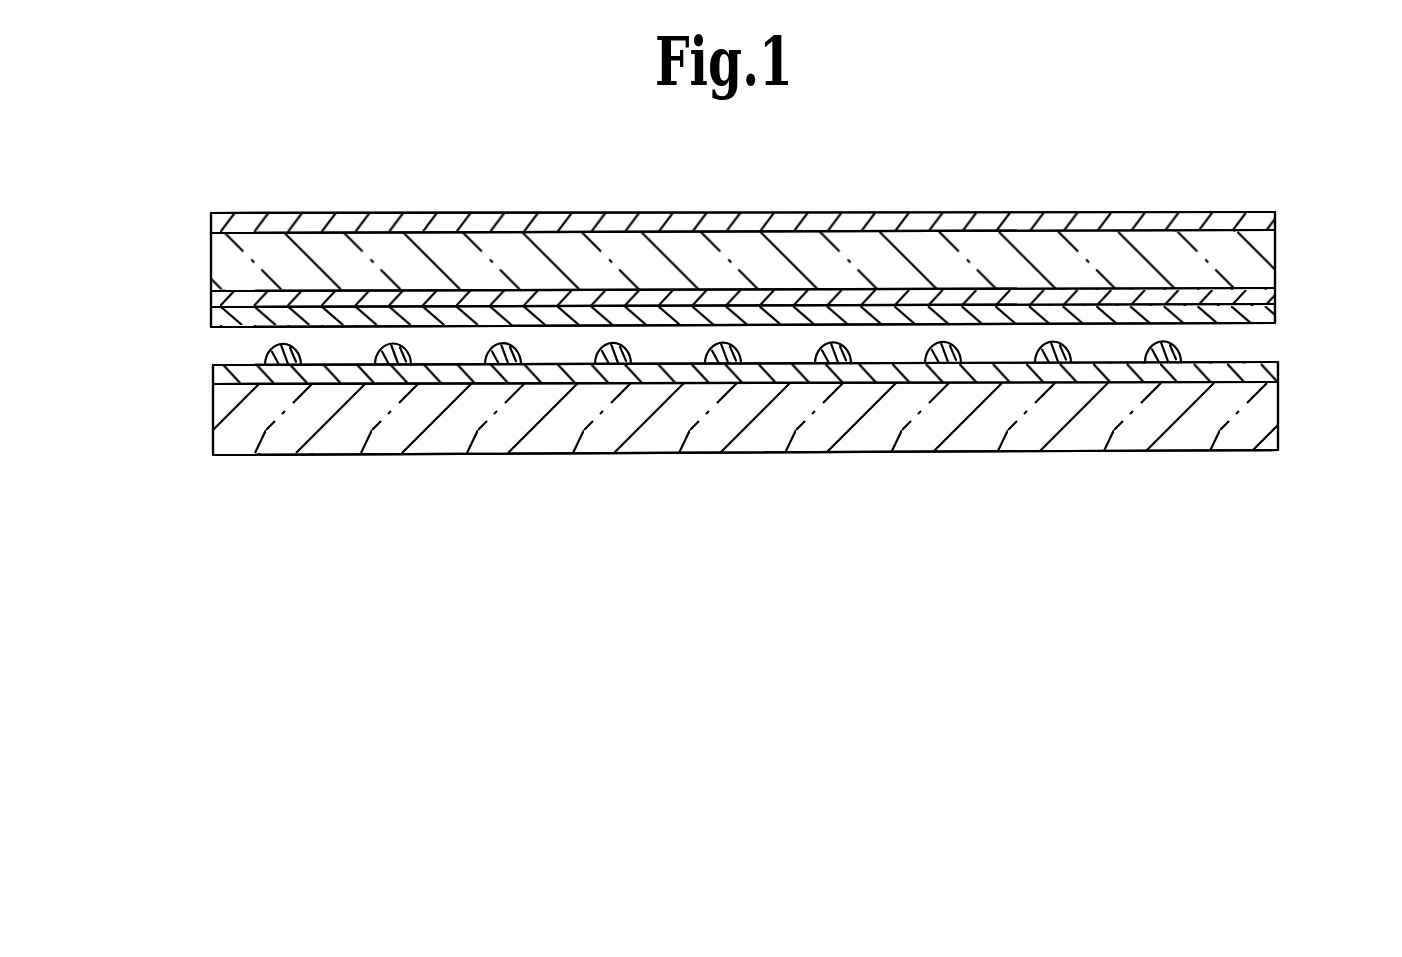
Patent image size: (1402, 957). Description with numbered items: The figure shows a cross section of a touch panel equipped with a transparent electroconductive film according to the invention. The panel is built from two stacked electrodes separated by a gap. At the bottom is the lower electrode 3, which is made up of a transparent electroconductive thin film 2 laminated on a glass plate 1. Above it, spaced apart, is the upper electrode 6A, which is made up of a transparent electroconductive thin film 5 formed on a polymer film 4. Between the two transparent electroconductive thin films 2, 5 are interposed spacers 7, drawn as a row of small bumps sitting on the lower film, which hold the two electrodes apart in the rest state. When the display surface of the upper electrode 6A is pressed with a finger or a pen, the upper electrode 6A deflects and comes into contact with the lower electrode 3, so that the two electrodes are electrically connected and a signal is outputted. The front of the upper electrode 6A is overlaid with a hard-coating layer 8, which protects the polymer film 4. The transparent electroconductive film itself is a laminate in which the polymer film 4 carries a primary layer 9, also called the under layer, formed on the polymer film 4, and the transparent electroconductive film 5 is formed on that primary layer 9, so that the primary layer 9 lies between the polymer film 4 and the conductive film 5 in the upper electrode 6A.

The glass plate 1 is at (1245, 417).
The transparent electroconductive thin film 2 is at (1268, 369).
The lower electrode 3 is at (739, 438).
The polymer film 4 is at (1242, 262).
The transparent electroconductive thin film 5 is at (1265, 315).
The upper electrode 6A is at (737, 264).
The spacers 7 is at (270, 352).
The hard-coating layer 8 is at (1265, 219).
The primary layer 9 is at (1257, 297).